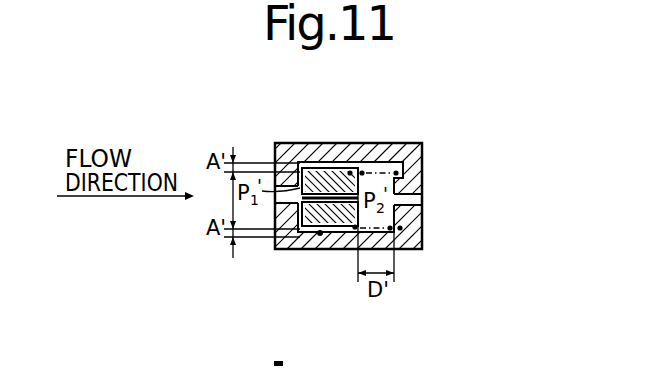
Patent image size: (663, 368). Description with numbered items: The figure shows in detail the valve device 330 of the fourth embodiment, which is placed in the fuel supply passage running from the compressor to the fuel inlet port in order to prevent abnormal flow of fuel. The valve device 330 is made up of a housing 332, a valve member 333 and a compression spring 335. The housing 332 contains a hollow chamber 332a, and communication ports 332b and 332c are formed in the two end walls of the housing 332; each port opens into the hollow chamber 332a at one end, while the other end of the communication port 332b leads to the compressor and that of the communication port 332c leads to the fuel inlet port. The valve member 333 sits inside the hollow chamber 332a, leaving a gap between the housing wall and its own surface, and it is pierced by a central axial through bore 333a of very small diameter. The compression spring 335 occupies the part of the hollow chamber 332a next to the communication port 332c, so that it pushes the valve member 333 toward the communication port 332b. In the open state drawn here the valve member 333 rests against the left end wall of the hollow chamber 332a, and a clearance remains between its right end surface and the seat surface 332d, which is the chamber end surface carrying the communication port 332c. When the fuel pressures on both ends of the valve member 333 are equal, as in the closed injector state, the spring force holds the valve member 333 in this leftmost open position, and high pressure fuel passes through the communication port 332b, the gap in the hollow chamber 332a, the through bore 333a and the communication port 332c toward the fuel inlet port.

The valve device 330 is at (347, 138).
The housing 332 is at (426, 141).
The hollow chamber 332a is at (384, 233).
The communication port 332b is at (283, 197).
The communication port 332c is at (417, 200).
The seat surface 332d is at (397, 178).
The valve member 333 is at (320, 236).
The central axial through bore 333a is at (350, 232).
The compression spring 335 is at (405, 229).